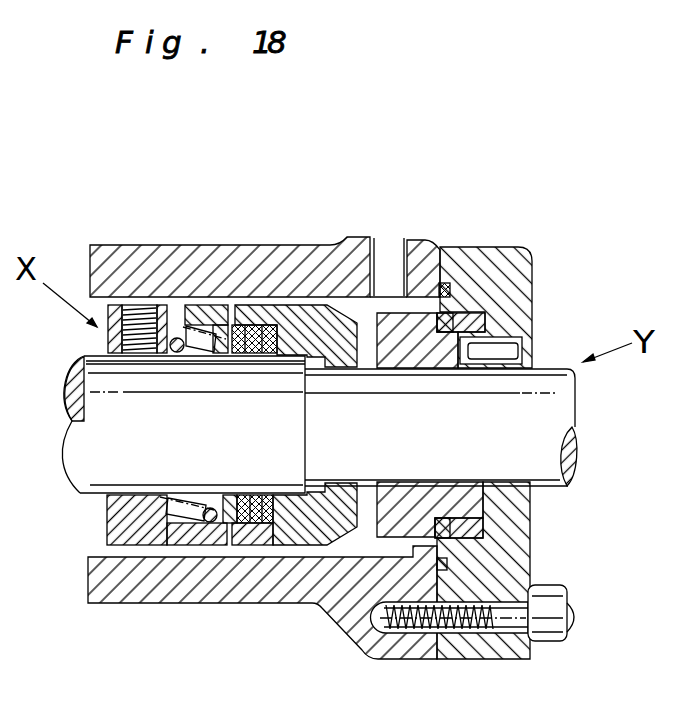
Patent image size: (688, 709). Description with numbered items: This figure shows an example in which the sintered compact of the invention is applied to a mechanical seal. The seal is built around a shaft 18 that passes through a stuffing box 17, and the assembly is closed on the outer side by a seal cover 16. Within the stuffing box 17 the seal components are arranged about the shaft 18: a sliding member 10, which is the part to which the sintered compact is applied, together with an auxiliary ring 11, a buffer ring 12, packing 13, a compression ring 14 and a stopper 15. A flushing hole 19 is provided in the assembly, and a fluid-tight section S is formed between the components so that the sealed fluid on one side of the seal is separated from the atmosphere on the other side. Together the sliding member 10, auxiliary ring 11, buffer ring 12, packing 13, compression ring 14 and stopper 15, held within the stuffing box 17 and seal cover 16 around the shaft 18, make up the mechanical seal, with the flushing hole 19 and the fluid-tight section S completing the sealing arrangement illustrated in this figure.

The sliding member 10 is at (415, 272).
The auxiliary ring 11 is at (313, 305).
The buffer ring 12 is at (455, 312).
The packing 13 is at (262, 325).
The compression ring 14 is at (235, 305).
The stopper 15 is at (117, 305).
The seal cover 16 is at (534, 256).
The stuffing box 17 is at (103, 247).
The shaft 18 is at (553, 370).
The flushing hole 19 is at (410, 313).
The fluid-tight section S is at (347, 297).